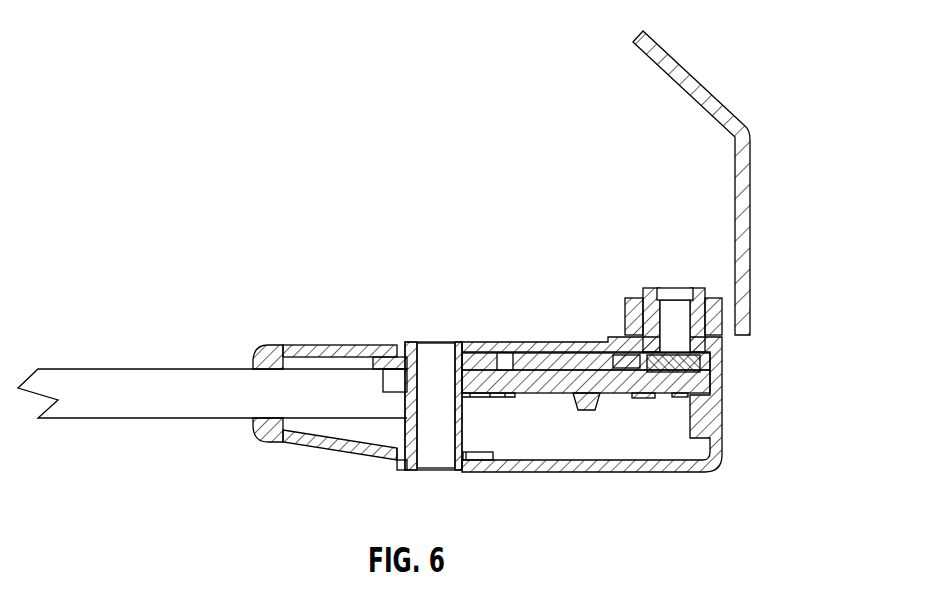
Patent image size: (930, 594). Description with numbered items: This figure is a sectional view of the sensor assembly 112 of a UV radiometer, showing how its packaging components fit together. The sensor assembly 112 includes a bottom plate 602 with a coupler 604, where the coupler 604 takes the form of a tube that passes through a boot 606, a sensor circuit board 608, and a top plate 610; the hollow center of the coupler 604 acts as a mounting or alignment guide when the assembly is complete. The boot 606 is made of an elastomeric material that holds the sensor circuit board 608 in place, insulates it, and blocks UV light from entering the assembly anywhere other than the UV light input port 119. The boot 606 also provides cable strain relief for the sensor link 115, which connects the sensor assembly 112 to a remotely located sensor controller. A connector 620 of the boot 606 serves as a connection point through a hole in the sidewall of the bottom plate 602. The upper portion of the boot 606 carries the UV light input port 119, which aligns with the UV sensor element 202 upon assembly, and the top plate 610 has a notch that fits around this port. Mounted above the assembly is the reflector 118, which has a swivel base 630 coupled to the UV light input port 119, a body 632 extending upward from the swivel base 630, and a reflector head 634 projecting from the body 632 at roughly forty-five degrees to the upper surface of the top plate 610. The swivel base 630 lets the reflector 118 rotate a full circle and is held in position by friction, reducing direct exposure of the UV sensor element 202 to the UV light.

The sensor assembly 112 is at (458, 52).
The sensor link 115 is at (108, 403).
The reflector 118 is at (745, 104).
The UV light input port 119 is at (660, 287).
The UV sensor element 202 is at (722, 384).
The bottom plate 602 is at (630, 467).
The coupler 604 is at (433, 342).
The boot 606 is at (333, 460).
The sensor circuit board 608 is at (520, 396).
The top plate 610 is at (523, 342).
The connector 620 is at (707, 425).
The swivel base 630 is at (720, 303).
The body 632 is at (755, 177).
The reflector head 634 is at (652, 38).